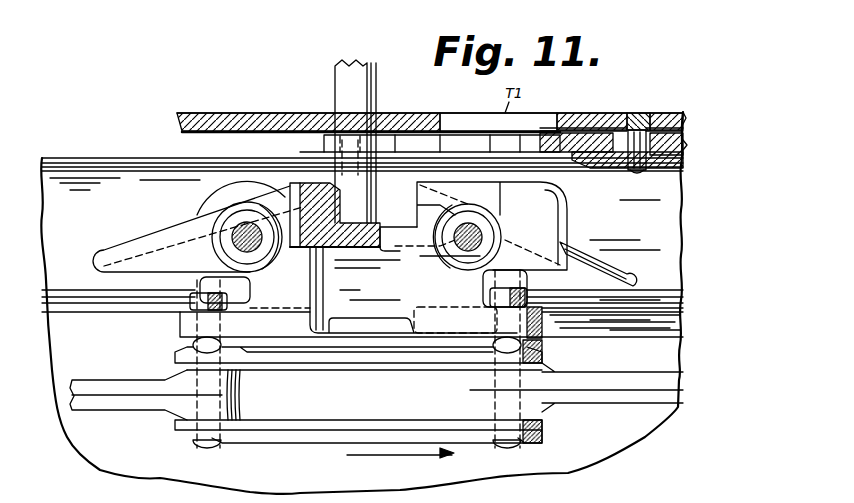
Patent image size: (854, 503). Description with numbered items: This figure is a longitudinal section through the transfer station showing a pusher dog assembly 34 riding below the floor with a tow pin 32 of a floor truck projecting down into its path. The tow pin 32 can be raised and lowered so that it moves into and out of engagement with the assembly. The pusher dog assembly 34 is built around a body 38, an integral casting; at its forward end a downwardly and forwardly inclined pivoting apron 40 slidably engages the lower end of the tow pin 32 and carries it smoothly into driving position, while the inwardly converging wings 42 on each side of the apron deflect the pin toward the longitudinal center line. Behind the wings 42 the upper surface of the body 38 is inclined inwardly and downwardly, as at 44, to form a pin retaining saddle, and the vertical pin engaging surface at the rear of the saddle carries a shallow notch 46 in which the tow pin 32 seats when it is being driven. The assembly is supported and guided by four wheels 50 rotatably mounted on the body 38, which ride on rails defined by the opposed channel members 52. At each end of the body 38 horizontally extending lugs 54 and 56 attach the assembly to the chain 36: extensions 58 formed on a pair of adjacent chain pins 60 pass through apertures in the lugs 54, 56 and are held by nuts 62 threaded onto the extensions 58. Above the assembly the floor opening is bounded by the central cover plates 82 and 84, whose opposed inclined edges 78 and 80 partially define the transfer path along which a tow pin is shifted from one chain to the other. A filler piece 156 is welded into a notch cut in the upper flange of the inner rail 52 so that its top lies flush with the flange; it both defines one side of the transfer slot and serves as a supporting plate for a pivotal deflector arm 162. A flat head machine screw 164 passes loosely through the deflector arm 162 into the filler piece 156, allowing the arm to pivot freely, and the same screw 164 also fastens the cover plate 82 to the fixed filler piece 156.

The tow pin 32 is at (379, 86).
The pusher dog assembly 34 is at (133, 243).
The chain 36 is at (313, 438).
The body 38 is at (373, 301).
The pivoting apron 40 is at (623, 266).
The wings 42 is at (568, 224).
The inclined upper surface 44 is at (397, 227).
The shallow notch 46 is at (318, 180).
The wheels 50 is at (200, 215).
The channel members 52 is at (122, 158).
The lug 54 is at (544, 326).
The lug 56 is at (182, 333).
The extensions 58 is at (196, 287).
The chain pins 60 is at (210, 449).
The nuts 62 is at (222, 312).
The inclined edge 78 is at (443, 113).
The inclined edge 80 is at (578, 111).
The cover plate 82 is at (217, 113).
The cover plate 84 is at (682, 110).
The filler piece 156 is at (607, 168).
The deflector arm 162 is at (684, 139).
The machine screw 164 is at (636, 111).